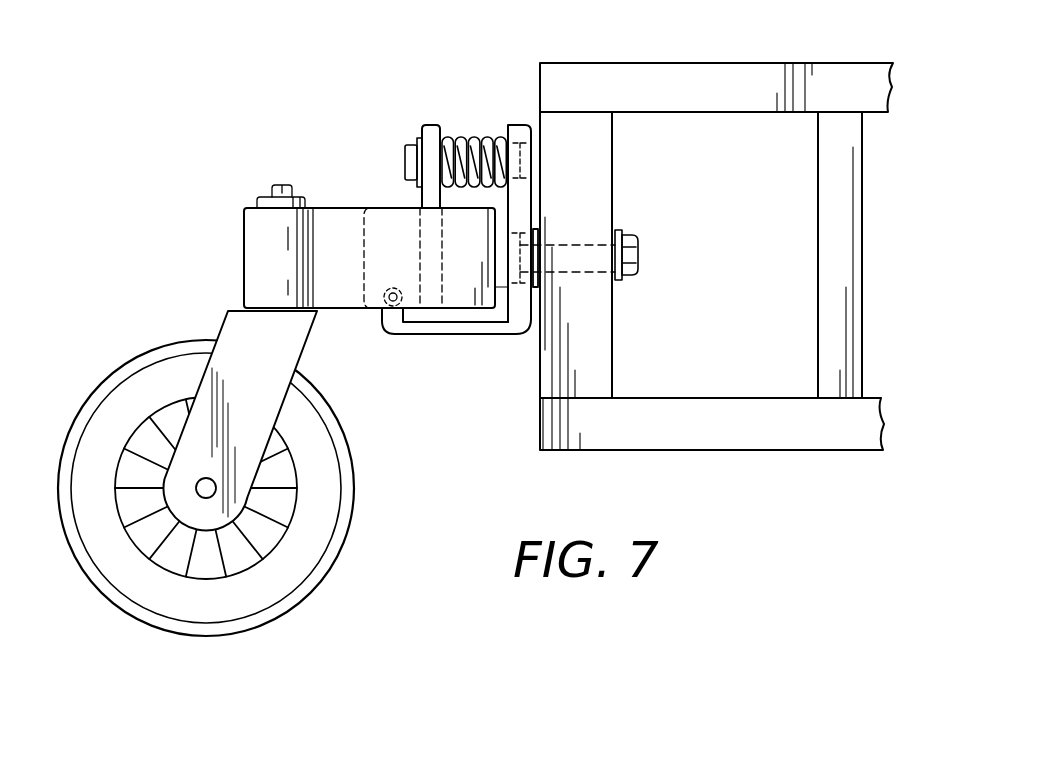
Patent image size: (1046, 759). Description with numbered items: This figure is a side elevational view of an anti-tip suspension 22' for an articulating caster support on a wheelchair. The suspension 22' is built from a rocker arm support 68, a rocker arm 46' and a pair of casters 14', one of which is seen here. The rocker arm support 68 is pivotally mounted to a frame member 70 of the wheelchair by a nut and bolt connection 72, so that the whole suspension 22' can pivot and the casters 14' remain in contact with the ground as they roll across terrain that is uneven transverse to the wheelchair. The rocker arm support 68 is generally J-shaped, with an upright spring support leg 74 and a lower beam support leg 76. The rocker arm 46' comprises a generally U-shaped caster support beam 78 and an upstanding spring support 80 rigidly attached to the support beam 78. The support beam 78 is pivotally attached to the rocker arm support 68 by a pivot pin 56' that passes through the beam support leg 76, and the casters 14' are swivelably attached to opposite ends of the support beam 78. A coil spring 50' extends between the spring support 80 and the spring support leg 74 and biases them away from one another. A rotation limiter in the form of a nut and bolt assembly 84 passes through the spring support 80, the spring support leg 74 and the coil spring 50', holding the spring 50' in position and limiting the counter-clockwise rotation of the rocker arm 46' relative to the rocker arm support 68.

The caster 14' is at (241, 488).
The suspension 22' is at (292, 44).
The rocker arm 46' is at (267, 416).
The coil spring 50' is at (469, 118).
The pivot pin 56' is at (386, 349).
The rocker arm support 68 is at (513, 334).
The frame member 70 is at (613, 202).
The nut and bolt connection 72 is at (632, 243).
The spring support leg 74 is at (513, 125).
The beam support leg 76 is at (440, 334).
The caster support beam 78 is at (337, 218).
The spring support 80 is at (433, 127).
The nut and bolt assembly 84 is at (410, 162).